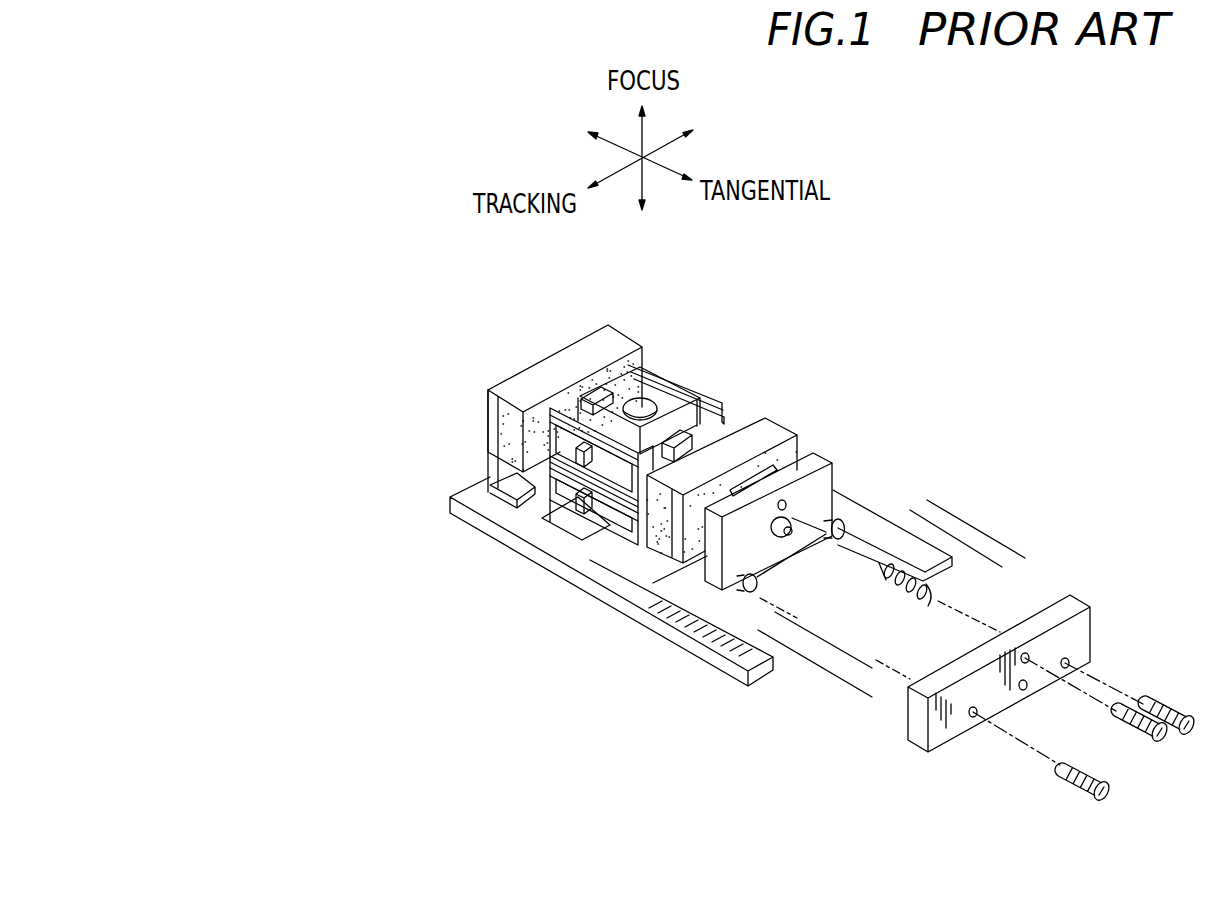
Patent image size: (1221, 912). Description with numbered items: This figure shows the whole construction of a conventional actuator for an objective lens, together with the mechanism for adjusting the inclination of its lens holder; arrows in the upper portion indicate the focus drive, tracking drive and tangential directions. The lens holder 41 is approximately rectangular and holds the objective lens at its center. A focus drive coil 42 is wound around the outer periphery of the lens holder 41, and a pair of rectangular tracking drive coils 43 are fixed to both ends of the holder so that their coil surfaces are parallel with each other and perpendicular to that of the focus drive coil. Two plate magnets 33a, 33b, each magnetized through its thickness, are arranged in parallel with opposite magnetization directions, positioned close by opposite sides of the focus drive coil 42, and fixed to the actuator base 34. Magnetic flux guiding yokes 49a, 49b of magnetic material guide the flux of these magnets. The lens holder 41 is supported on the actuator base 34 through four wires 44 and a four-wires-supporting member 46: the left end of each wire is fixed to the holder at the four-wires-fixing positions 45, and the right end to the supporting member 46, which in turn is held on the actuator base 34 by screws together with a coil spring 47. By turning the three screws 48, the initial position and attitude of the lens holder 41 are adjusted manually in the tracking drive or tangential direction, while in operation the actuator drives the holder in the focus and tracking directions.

The plate magnet 33a is at (535, 383).
The plate magnet 33b is at (767, 423).
The actuator base 34 is at (464, 492).
The lens holder 41 is at (643, 395).
The focus drive coil 42 is at (620, 508).
The tracking drive coils 43 is at (710, 397).
The wires 44 is at (933, 523).
The four-wires-fixing positions 45 is at (577, 450).
The four-wires-supporting member 46 is at (910, 737).
The coil spring 47 is at (927, 597).
The screws 48 is at (1217, 742).
The magnetic flux guiding yoke 49a is at (593, 385).
The magnetic flux guiding yoke 49b is at (683, 418).